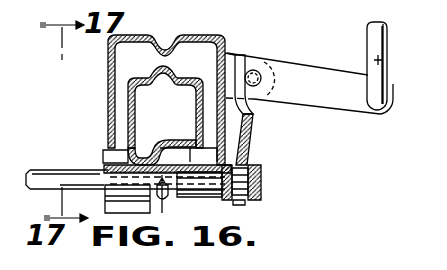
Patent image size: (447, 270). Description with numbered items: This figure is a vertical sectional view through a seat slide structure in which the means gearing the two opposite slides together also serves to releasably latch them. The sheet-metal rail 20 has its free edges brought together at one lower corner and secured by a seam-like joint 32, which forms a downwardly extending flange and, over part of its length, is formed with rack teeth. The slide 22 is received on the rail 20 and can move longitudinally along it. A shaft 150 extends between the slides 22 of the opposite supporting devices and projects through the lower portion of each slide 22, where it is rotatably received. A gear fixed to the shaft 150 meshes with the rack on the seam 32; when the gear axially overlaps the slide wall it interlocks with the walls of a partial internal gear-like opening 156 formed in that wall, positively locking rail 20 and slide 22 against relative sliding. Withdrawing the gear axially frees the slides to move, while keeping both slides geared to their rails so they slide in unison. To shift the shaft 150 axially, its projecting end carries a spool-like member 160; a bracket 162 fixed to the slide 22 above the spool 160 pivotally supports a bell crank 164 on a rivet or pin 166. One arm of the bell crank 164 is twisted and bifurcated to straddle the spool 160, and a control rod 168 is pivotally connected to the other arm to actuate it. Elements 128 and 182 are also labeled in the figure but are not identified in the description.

The rail 20 is at (185, 74).
The slide 22 is at (178, 38).
The seam-like joint 32 is at (158, 142).
The lower block 128 is at (138, 214).
The shaft 150 is at (45, 170).
The partial internal gear-like opening 156 is at (101, 148).
The spool-like member 160 is at (262, 190).
The bracket 162 is at (235, 55).
The bell crank 164 is at (320, 98).
The rivet or pin 166 is at (261, 72).
The control rod 168 is at (388, 59).
The cylinder 182 is at (198, 198).